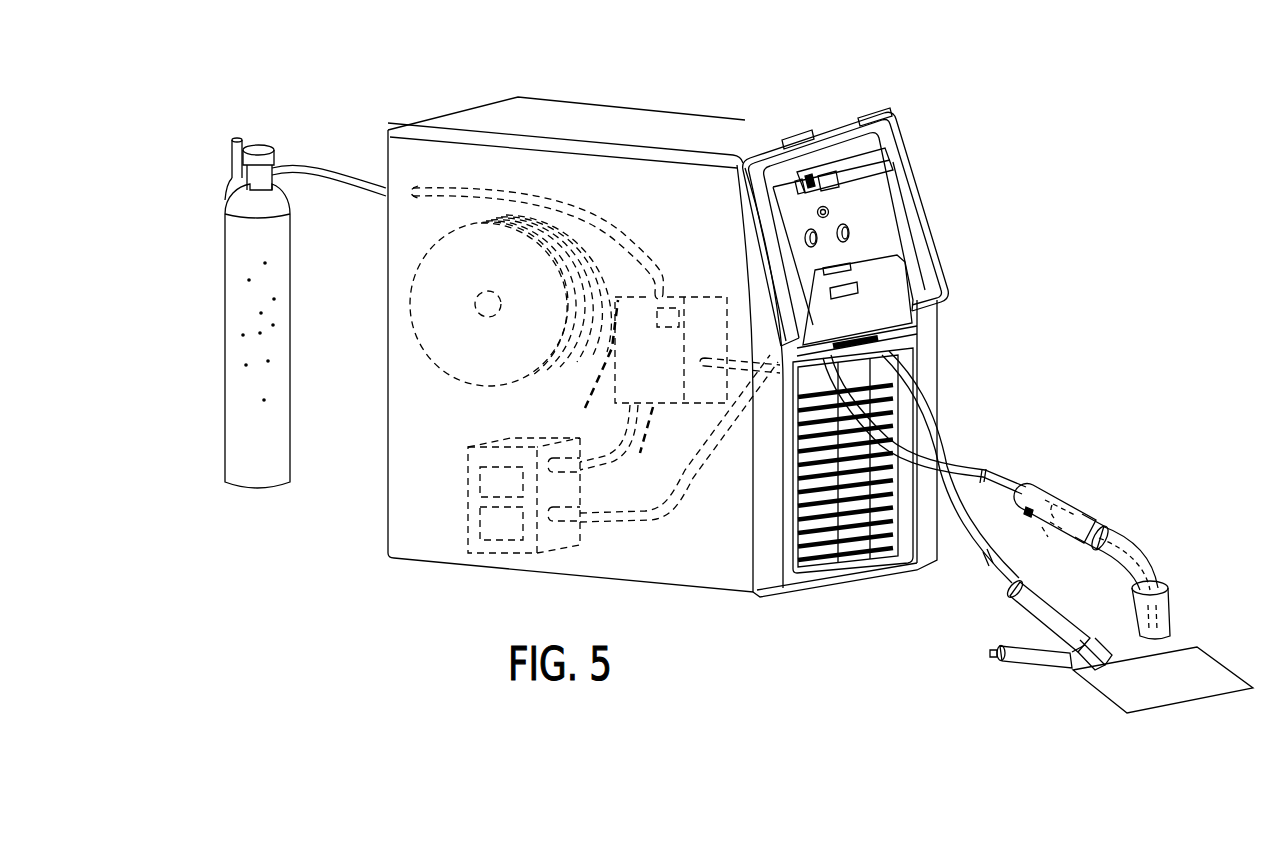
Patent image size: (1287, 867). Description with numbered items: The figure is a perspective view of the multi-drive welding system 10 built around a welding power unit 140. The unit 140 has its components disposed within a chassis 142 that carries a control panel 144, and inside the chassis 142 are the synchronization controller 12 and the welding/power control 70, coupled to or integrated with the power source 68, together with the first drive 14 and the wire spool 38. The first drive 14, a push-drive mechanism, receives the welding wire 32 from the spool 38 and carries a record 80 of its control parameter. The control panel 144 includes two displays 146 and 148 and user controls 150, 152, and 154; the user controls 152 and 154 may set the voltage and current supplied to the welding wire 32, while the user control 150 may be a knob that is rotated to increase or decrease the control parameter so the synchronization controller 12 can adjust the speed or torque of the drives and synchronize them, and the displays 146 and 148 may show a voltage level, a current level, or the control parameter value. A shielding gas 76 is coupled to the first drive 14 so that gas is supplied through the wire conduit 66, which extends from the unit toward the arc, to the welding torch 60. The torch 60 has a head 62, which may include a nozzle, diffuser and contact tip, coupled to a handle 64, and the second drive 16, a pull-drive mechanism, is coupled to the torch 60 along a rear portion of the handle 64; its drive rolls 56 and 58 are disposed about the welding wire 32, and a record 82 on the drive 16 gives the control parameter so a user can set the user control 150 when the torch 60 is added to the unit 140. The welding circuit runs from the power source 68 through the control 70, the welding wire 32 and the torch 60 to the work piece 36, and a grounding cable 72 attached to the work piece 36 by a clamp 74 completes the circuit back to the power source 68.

The multi-drive welding system 10 is at (1038, 94).
The welding power unit 140 is at (525, 62).
The chassis 142 is at (656, 120).
The display 148 is at (792, 152).
The control panel 144 is at (833, 162).
The display 146 is at (845, 178).
The user control 150 is at (846, 198).
The user control 152 is at (832, 220).
The user control 154 is at (852, 233).
The shielding gas 76 is at (250, 305).
The wire spool 38 is at (467, 372).
The record 80 is at (685, 293).
The welding wire 32 is at (612, 376).
The first drive 14 is at (616, 445).
The welding/power control 70 is at (478, 476).
The synchronization controller 12 is at (478, 515).
The power source 68 is at (600, 540).
The wire conduit 66 is at (960, 468).
The welding torch 60 is at (1097, 474).
The second drive 16 is at (1048, 486).
The drive roll 56 is at (1092, 500).
The record 82 is at (1022, 514).
The drive roll 58 is at (1050, 538).
The handle 64 is at (1142, 556).
The head 62 is at (1173, 610).
The grounding cable 72 is at (962, 535).
The clamp 74 is at (1025, 662).
The work piece 36 is at (1172, 693).